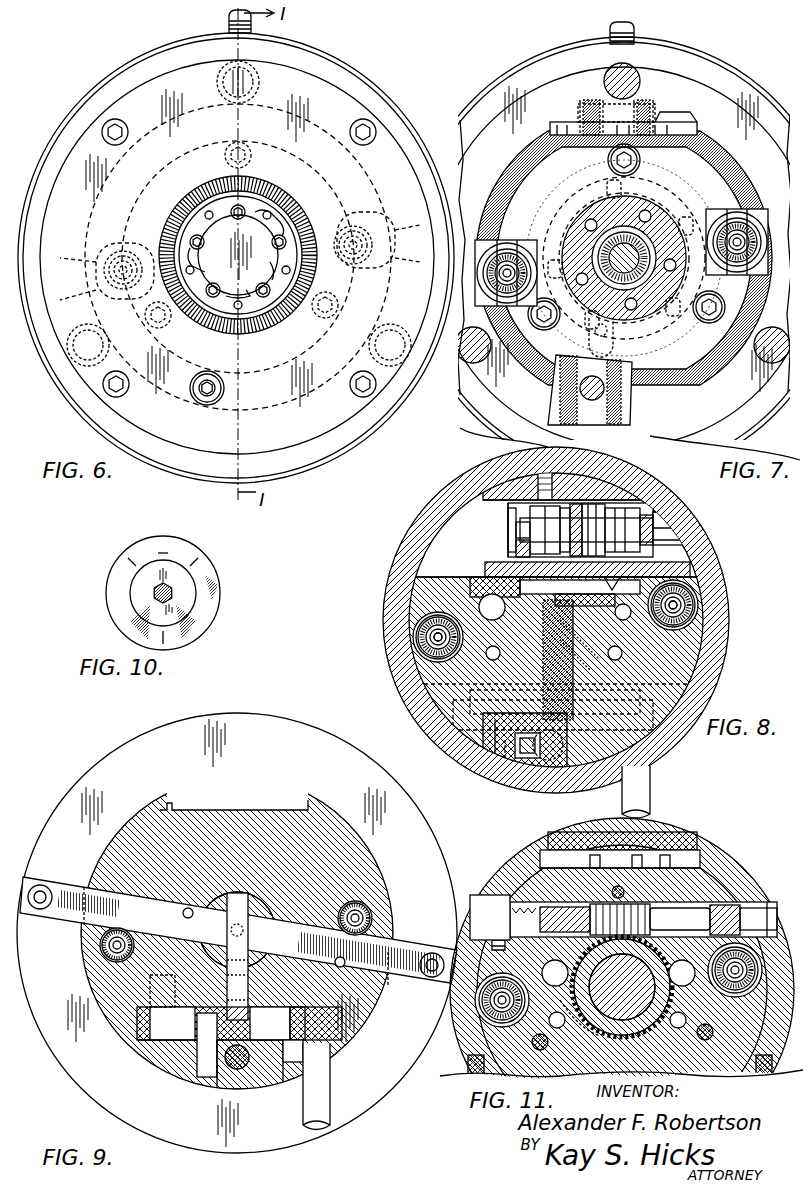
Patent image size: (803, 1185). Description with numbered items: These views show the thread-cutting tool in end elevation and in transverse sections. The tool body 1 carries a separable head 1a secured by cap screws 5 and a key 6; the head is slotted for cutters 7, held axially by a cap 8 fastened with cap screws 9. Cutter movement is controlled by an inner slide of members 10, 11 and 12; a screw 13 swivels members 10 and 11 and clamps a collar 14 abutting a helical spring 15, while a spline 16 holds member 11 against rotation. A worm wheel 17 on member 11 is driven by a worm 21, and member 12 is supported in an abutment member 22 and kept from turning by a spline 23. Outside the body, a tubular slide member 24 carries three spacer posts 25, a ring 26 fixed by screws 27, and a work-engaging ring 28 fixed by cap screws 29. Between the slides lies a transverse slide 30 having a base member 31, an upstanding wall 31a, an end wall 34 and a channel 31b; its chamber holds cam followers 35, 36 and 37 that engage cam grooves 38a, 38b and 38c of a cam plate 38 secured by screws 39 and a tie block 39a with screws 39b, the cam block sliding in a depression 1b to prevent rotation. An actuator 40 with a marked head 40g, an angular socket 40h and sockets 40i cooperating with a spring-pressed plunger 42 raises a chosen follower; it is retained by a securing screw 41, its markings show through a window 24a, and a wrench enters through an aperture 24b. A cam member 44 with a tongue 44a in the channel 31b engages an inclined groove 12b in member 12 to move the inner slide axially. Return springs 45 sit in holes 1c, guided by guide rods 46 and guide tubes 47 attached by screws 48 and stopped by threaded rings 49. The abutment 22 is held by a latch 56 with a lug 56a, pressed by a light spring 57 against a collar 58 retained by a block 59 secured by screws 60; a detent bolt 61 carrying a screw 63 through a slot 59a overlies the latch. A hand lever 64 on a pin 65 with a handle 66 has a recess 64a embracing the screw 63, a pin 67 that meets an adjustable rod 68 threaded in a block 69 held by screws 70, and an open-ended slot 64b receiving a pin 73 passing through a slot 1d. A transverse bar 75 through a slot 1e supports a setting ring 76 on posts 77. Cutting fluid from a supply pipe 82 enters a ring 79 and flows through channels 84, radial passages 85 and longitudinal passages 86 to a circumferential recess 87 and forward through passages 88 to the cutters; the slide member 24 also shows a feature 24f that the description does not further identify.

In FIG. 6, the tool body 1 is at (199, 248).
In FIG. 8, the tool body 1 is at (700, 640).
In FIG. 9, the tool body 1 is at (150, 815).
In FIG. 11, the tool body 1 is at (728, 860).
In FIG. 6, the separable head 1a is at (250, 332).
In FIG. 7, the separable head 1a is at (678, 320).
In FIG. 7, the depression 1b is at (700, 133).
In FIG. 8, the depression 1b is at (483, 498).
In FIG. 9, the depression 1b is at (175, 806).
In FIG. 11, the depression 1b is at (560, 870).
In FIG. 8, the holes 1c is at (690, 595).
In FIG. 9, the holes 1c is at (372, 920).
In FIG. 11, the holes 1c is at (760, 985).
In FIG. 9, the slot 1d is at (227, 968).
In FIG. 9, the slot 1e is at (342, 965).
In FIG. 6, the cap screws 5 is at (338, 306).
In FIG. 7, the cap screws 5 is at (540, 323).
In FIG. 11, the cap screws 5 is at (710, 1038).
In FIG. 7, the key 6 is at (603, 335).
In FIG. 8, the key 6 is at (629, 612).
In FIG. 6, the cutters 7 is at (238, 302).
In FIG. 6, the cap 8 is at (282, 294).
In FIG. 6, the cap screws 9 is at (268, 292).
In FIG. 7, the slide member 10 is at (570, 215).
In FIG. 11, the slide member 11 is at (645, 1020).
In FIG. 8, the slide member 12 is at (498, 657).
In FIG. 11, the slide member 12 is at (622, 987).
In FIG. 8, the inclined groove 12b is at (480, 606).
In FIG. 7, the screw 13 is at (642, 272).
In FIG. 7, the collar 14 is at (684, 250).
In FIG. 7, the helical spring 15 is at (594, 218).
In FIG. 11, the spline 16 is at (660, 950).
In FIG. 11, the worm wheel 17 is at (672, 990).
In FIG. 11, the worm 21 is at (650, 905).
In FIG. 8, the abutment member 22 is at (621, 653).
In FIG. 9, the abutment member 22 is at (262, 905).
In FIG. 8, the spline 23 is at (580, 650).
In FIG. 7, the tubular slide member 24 is at (492, 108).
In FIG. 8, the tubular slide member 24 is at (404, 552).
In FIG. 11, the tubular slide member 24 is at (735, 830).
In FIG. 8, the window 24a is at (660, 506).
In FIG. 8, the aperture 24b is at (703, 518).
In FIG. 11, the channel end 24f is at (762, 905).
In FIG. 6, the spacer posts 25 is at (398, 362).
In FIG. 7, the spacer posts 25 is at (466, 362).
In FIG. 6, the ring 26 is at (366, 167).
In FIG. 6, the screws 27 is at (254, 82).
In FIG. 6, the work-engaging ring 28 is at (372, 104).
In FIG. 6, the cap screws 29 is at (362, 394).
In FIG. 8, the transverse slide 30 is at (508, 548).
In FIG. 8, the base member 31 is at (485, 570).
In FIG. 8, the upstanding wall 31a is at (516, 516).
In FIG. 8, the channel 31b is at (510, 584).
In FIG. 8, the end wall 34 is at (645, 545).
In FIG. 8, the cam follower 35 is at (600, 504).
In FIG. 8, the cam follower 36 is at (578, 504).
In FIG. 8, the cam follower 37 is at (566, 504).
In FIG. 7, the cam plate 38 is at (572, 120).
In FIG. 8, the cam plate 38 is at (483, 490).
In FIG. 11, the cam plate 38 is at (552, 846).
In FIG. 7, the cam groove 38a is at (672, 124).
In FIG. 11, the cam groove 38a is at (668, 855).
In FIG. 7, the cam groove 38b is at (642, 124).
In FIG. 11, the cam groove 38b is at (640, 855).
In FIG. 7, the cam groove 38c is at (556, 125).
In FIG. 11, the cam groove 38c is at (595, 855).
In FIG. 7, the screws 39 is at (660, 100).
In FIG. 8, the screws 39 is at (535, 452).
In FIG. 8, the tie block 39a is at (640, 478).
In FIG. 8, the screws 39b is at (500, 462).
In FIG. 10, the actuator 40 is at (108, 612).
In FIG. 8, the actuator 40 is at (703, 530).
In FIG. 10, the actuator head 40g is at (128, 556).
In FIG. 10, the angular socket 40h is at (176, 590).
In FIG. 8, the sockets 40i is at (520, 528).
In FIG. 8, the securing screw 41 is at (530, 528).
In FIG. 8, the spring-pressed plunger 42 is at (522, 548).
In FIG. 8, the cam member 44 is at (618, 610).
In FIG. 8, the tongue 44a is at (612, 584).
In FIG. 6, the helical springs 45 is at (372, 245).
In FIG. 7, the helical springs 45 is at (750, 226).
In FIG. 8, the helical springs 45 is at (698, 606).
In FIG. 9, the helical springs 45 is at (372, 916).
In FIG. 11, the helical springs 45 is at (738, 990).
In FIG. 7, the guide rod 46 is at (740, 272).
In FIG. 8, the guide rod 46 is at (690, 615).
In FIG. 9, the guide rod 46 is at (362, 912).
In FIG. 6, the guide tube 47 is at (372, 240).
In FIG. 7, the guide tube 47 is at (755, 262).
In FIG. 11, the guide tube 47 is at (730, 990).
In FIG. 6, the screw 48 is at (372, 252).
In FIG. 7, the threaded ring 49 is at (736, 215).
In FIG. 8, the latch 56 is at (545, 678).
In FIG. 8, the lug 56a is at (573, 680).
In FIG. 8, the helical spring 57 is at (573, 700).
In FIG. 8, the collar 58 is at (575, 712).
In FIG. 8, the block 59 is at (552, 760).
In FIG. 9, the block 59 is at (255, 1065).
In FIG. 9, the slot 59a is at (300, 1052).
In FIG. 9, the screws 60 is at (196, 1060).
In FIG. 8, the detent bolt 61 is at (528, 758).
In FIG. 9, the detent bolt 61 is at (232, 1068).
In FIG. 8, the screw 63 is at (560, 735).
In FIG. 9, the screw 63 is at (285, 1008).
In FIG. 8, the hand lever 64 is at (650, 745).
In FIG. 9, the hand lever 64 is at (342, 1022).
In FIG. 9, the recess 64a is at (255, 1005).
In FIG. 9, the open-ended slot 64b is at (185, 1007).
In FIG. 8, the pin 65 is at (483, 735).
In FIG. 9, the pin 65 is at (160, 1035).
In FIG. 8, the handle 66 is at (652, 778).
In FIG. 9, the handle 66 is at (322, 1122).
In FIG. 8, the pin 67 is at (495, 760).
In FIG. 9, the pin 67 is at (200, 1050).
In FIG. 7, the rod 68 is at (590, 400).
In FIG. 8, the rod 68 is at (510, 770).
In FIG. 7, the block 69 is at (640, 395).
In FIG. 7, the screws 70 is at (618, 412).
In FIG. 9, the pin 73 is at (238, 895).
In FIG. 9, the transverse bar 75 is at (300, 932).
In FIG. 9, the setting ring 76 is at (65, 808).
In FIG. 9, the posts 77 is at (45, 878).
In FIG. 6, the ring 79 is at (343, 62).
In FIG. 7, the ring 79 is at (740, 63).
In FIG. 6, the fluid supply pipe 82 is at (227, 19).
In FIG. 7, the fluid supply pipe 82 is at (636, 30).
In FIG. 8, the channels 84 is at (700, 694).
In FIG. 11, the channels 84 is at (765, 1065).
In FIG. 8, the radial passages 85 is at (700, 676).
In FIG. 7, the longitudinal passages 86 is at (552, 322).
In FIG. 8, the longitudinal passages 86 is at (650, 655).
In FIG. 11, the longitudinal passages 86 is at (680, 1030).
In FIG. 7, the circumferential recess 87 is at (650, 180).
In FIG. 7, the passages 88 is at (640, 323).